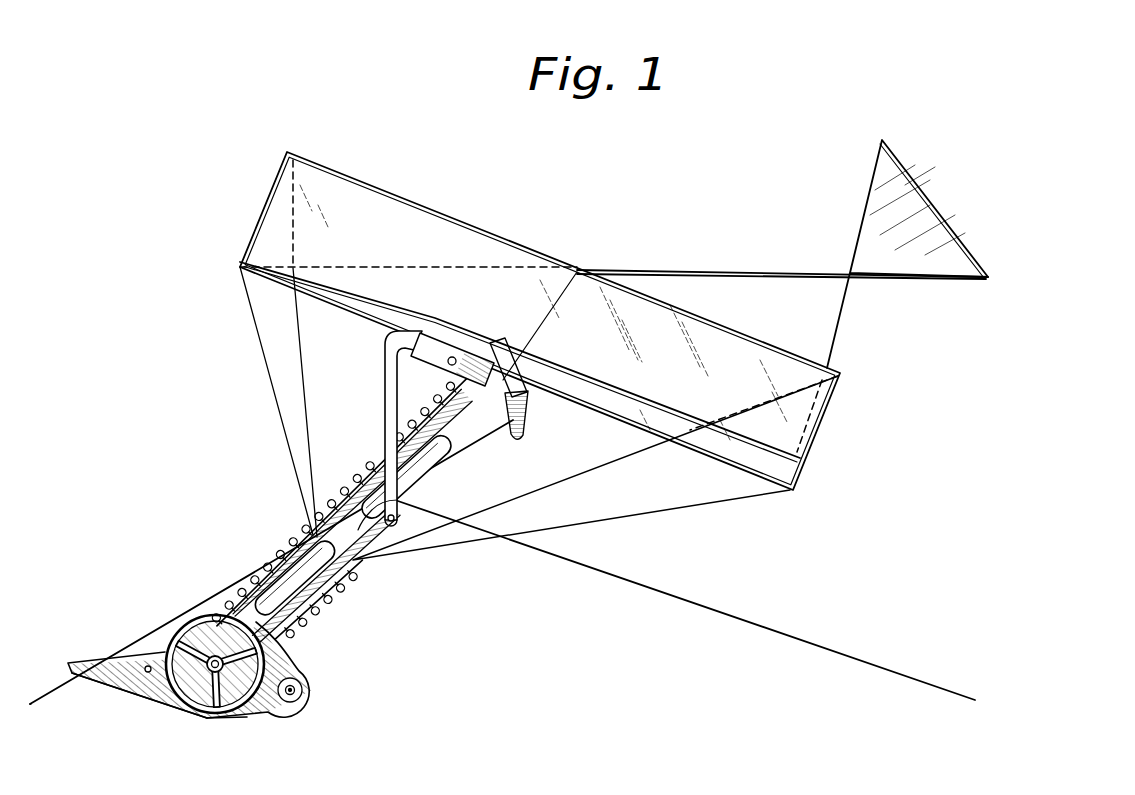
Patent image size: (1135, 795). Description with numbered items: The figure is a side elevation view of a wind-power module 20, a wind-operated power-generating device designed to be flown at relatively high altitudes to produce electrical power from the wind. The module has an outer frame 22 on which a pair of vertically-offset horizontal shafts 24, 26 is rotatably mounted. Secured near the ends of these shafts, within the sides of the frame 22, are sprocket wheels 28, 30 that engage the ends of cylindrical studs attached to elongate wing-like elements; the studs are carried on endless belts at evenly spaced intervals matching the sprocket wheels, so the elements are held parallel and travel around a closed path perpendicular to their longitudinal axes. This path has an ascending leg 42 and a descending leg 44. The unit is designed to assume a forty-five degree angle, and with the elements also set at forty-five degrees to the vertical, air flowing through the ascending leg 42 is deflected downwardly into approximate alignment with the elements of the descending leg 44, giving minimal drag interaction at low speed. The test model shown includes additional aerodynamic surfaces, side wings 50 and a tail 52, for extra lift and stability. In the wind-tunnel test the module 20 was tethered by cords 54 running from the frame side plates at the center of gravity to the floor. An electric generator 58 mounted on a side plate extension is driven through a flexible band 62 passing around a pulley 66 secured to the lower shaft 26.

The wind-power module 20 is at (233, 502).
The outer frame 22 is at (360, 495).
The horizontal shaft 24 is at (477, 433).
The lower shaft 26 is at (185, 705).
The sprocket wheel 28 is at (530, 428).
The sprocket wheel 30 is at (207, 630).
The ascending leg 42 is at (258, 541).
The descending leg 44 is at (335, 621).
The side wings 50 is at (393, 220).
The tail 52 is at (905, 215).
The cords 54 is at (155, 627).
The electric generator 58 is at (285, 712).
The flexible band 62 is at (303, 689).
The pulley 66 is at (230, 722).